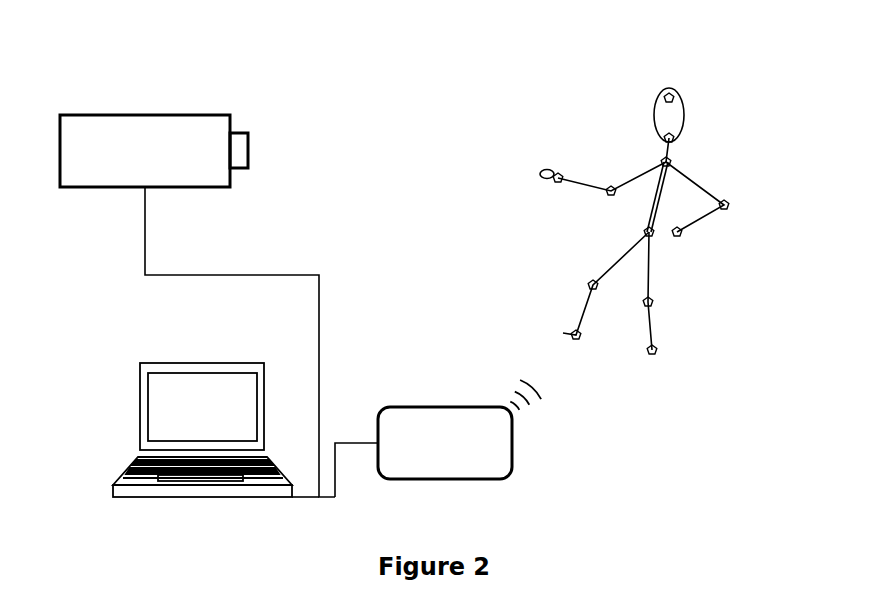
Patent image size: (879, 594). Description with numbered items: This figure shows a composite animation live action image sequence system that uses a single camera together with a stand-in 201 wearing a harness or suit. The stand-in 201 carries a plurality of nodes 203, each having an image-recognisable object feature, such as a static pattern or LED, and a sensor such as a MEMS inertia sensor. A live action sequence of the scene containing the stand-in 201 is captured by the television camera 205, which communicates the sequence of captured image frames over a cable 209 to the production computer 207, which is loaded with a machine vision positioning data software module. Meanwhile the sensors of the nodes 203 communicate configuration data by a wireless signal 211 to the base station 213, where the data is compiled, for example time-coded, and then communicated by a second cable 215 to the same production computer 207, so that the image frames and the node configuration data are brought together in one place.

The stand-in 201 is at (752, 125).
The nodes 203 is at (726, 208).
The television camera 205 is at (238, 108).
The production computer 207 is at (135, 462).
The cable 209 is at (255, 274).
The wireless signal 211 is at (548, 417).
The base station 213 is at (495, 488).
The cable 215 is at (335, 469).